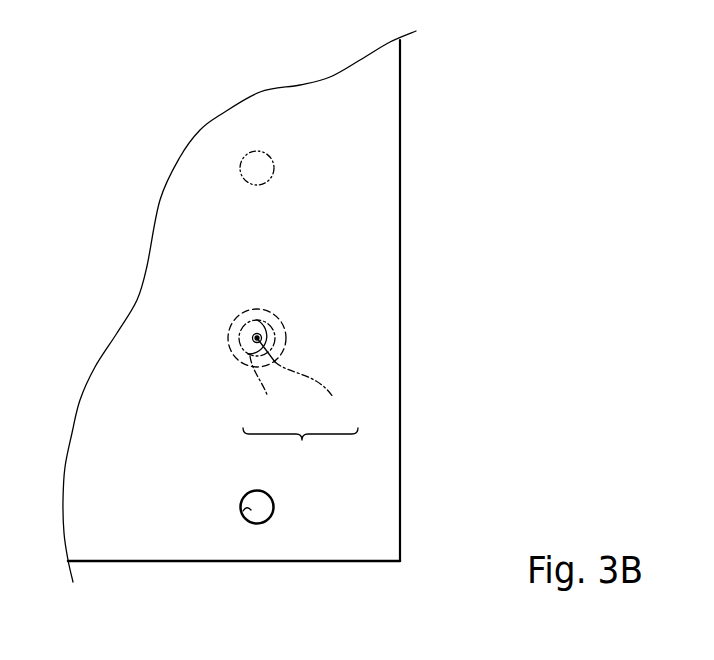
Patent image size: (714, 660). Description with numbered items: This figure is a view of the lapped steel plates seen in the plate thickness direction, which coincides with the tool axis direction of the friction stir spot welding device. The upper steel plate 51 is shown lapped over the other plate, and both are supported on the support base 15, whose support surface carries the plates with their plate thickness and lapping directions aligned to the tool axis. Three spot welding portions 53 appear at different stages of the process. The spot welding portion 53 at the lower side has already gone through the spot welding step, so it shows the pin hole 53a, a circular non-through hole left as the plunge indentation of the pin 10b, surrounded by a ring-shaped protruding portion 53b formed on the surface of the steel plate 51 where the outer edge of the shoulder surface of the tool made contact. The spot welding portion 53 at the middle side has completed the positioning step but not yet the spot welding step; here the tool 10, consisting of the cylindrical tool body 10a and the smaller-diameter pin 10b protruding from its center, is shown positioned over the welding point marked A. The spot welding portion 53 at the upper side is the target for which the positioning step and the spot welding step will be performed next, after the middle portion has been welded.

The steel plate 51 is at (171, 206).
The spot welding portion 53 is at (274, 165).
The pin hole 53a is at (242, 511).
The ring-shaped protruding portion 53b is at (240, 499).
The tool 10 is at (300, 452).
The tool body 10a is at (267, 395).
The pin 10b is at (306, 386).
The support base 15 is at (279, 319).
The irradiation point A is at (258, 335).